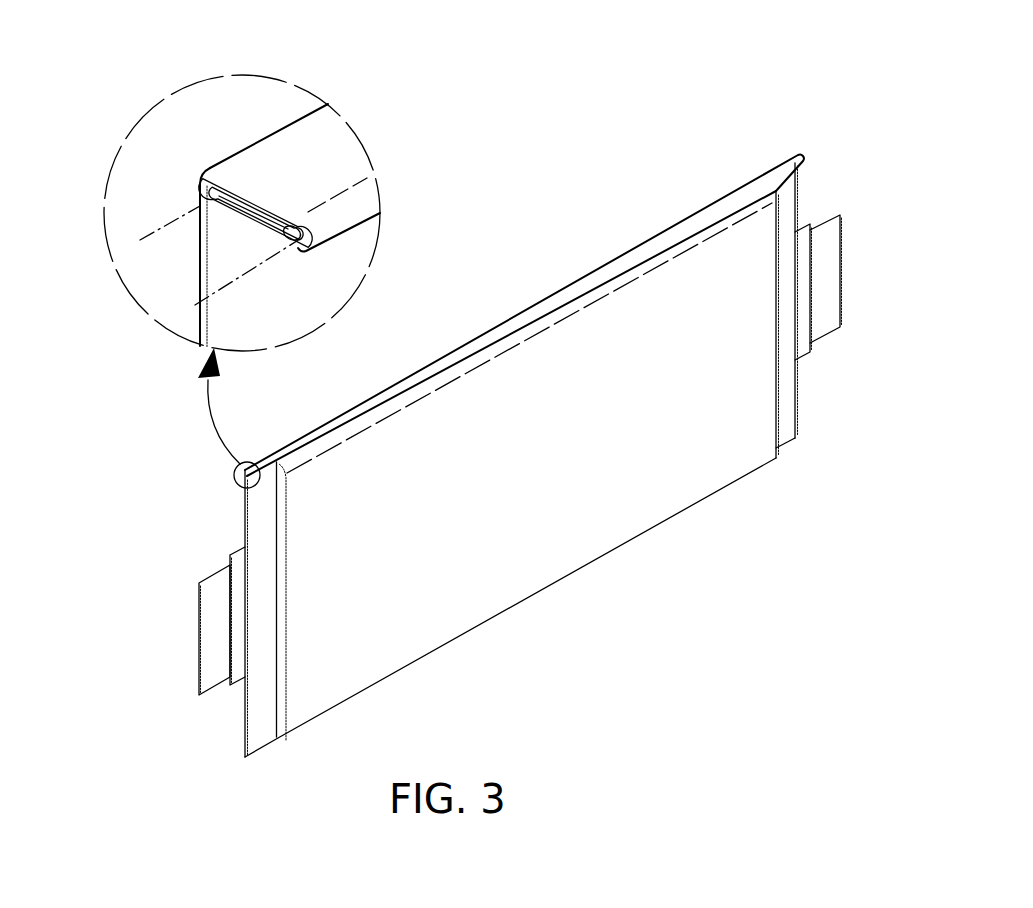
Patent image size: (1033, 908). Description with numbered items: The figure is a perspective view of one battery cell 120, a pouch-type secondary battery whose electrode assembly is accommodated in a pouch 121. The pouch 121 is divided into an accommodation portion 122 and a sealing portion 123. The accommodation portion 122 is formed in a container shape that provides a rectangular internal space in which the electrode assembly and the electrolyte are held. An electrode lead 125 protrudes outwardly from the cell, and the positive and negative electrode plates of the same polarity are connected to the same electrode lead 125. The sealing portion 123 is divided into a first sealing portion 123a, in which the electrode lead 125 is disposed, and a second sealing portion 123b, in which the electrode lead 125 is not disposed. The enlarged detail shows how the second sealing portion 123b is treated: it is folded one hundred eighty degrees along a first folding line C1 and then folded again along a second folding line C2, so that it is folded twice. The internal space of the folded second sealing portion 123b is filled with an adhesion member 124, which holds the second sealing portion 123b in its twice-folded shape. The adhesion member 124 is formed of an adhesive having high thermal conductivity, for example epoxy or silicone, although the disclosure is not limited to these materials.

The battery cell 120 is at (502, 124).
The pouch 121 is at (535, 564).
The accommodation portion 122 is at (565, 371).
The sealing portion 123 is at (782, 89).
The first sealing portion 123a is at (218, 238).
The second sealing portion 123b is at (282, 157).
The adhesion member 124 is at (290, 236).
The electrode lead 125 is at (823, 317).
The first folding line C1 is at (173, 220).
The second folding line C2 is at (195, 305).